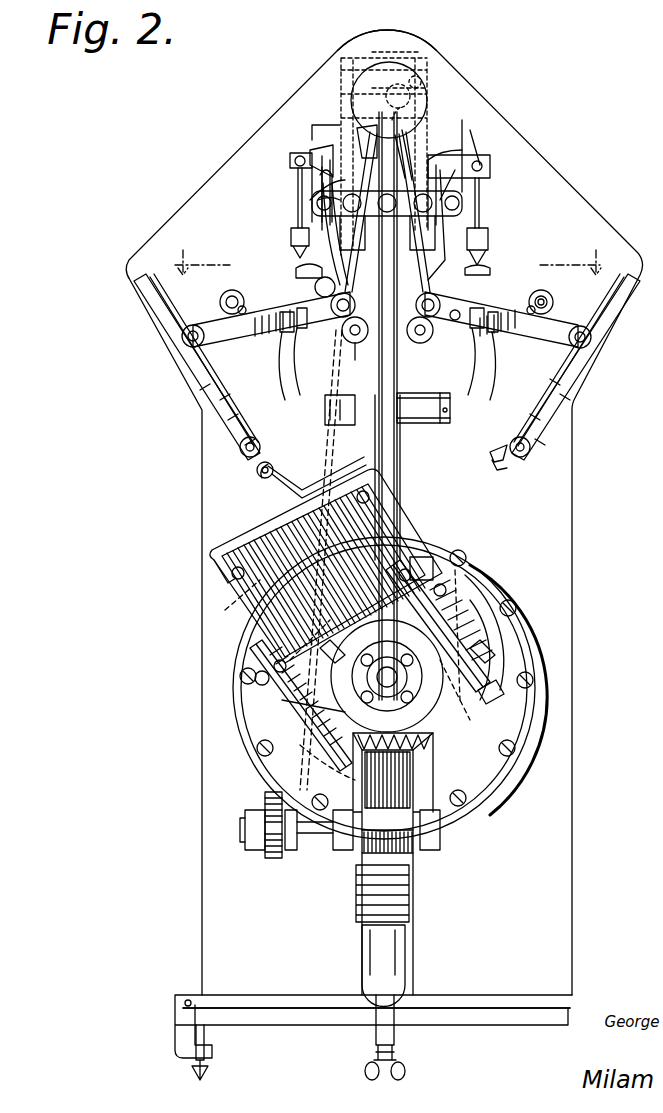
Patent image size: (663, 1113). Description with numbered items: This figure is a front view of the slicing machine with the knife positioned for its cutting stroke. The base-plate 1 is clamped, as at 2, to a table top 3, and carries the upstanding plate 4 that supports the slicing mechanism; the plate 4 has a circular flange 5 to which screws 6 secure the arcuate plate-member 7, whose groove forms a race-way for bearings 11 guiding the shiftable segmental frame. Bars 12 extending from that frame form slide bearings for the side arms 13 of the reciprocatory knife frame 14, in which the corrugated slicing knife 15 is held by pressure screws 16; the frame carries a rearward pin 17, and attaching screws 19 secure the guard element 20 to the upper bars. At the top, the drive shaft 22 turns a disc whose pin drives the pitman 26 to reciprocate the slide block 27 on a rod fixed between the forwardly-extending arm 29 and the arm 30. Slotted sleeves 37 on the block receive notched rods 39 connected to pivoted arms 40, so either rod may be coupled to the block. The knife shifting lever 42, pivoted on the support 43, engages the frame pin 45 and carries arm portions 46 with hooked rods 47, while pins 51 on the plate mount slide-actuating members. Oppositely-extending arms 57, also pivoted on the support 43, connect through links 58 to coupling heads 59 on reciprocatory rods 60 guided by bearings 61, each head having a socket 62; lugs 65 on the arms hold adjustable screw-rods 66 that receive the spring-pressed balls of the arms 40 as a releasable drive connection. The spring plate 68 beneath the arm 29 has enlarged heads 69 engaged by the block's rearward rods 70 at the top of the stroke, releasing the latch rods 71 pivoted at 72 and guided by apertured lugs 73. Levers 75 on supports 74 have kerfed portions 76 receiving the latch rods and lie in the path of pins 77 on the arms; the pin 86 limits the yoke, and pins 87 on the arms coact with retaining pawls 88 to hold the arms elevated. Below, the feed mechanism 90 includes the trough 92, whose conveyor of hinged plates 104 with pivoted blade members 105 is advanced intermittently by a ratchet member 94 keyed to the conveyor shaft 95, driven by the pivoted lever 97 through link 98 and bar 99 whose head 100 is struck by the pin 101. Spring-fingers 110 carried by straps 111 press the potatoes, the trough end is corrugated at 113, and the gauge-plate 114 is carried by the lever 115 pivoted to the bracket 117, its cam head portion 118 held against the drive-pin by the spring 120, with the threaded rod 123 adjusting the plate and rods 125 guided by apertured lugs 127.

The base-plate 1 is at (488, 997).
The clamp 2 is at (394, 1040).
The table top 3 is at (474, 1018).
The upstanding plate 4 is at (384, 512).
The circular flange 5 is at (520, 612).
The screws 6 is at (505, 600).
The arcuate plate-member 7 is at (538, 640).
The bearings 11 is at (470, 565).
The bars 12 is at (464, 691).
The side arms 13 is at (533, 672).
The knife frame 14 is at (236, 535).
The slicing knife 15 is at (230, 563).
The pressure screws 16 is at (400, 492).
The pin 17 is at (272, 478).
The attaching screws 19 is at (274, 666).
The guard element 20 is at (346, 655).
The drive shaft 22 is at (389, 100).
The drive pitman 26 is at (420, 137).
The slide block 27 is at (466, 228).
The forwardly-extending arm 29 is at (346, 152).
The arm 30 is at (290, 247).
The sleeves 37 is at (490, 240).
The rods 39 is at (318, 148).
The pivoted arms 40 is at (322, 322).
The knife shifting lever 42 is at (352, 350).
The support 43 is at (345, 449).
The pin 45 is at (275, 620).
The arm portions 46 is at (316, 288).
The rods 47 is at (318, 188).
The pins 51 is at (365, 351).
The arms 57 is at (253, 338).
The link 58 is at (205, 360).
The coupling head 59 is at (242, 455).
The reciprocatory rod 60 is at (168, 312).
The bearings 61 is at (235, 378).
The socket 62 is at (384, 462).
The lugs 65 is at (387, 367).
The screw-rods 66 is at (394, 375).
The spring plate 68 is at (482, 160).
The terminal enlarged portions 69 is at (292, 160).
The rearwardly-extending rods 70 is at (312, 200).
The latch rods 71 is at (305, 188).
The pivot 72 is at (290, 170).
The apertured lugs 73 is at (290, 232).
The supports 74 is at (510, 300).
The levers 75 is at (305, 280).
The kerfed portion 76 is at (490, 270).
The pins 77 is at (385, 294).
The pin 86 is at (470, 150).
The pins 87 is at (428, 63).
The retaining pawls 88 is at (552, 312).
The feed mechanism 90 is at (418, 780).
The trough 92 is at (478, 692).
The ratchet member 94 is at (265, 800).
The conveyor shaft 95 is at (325, 838).
The pivoted lever 97 is at (290, 856).
The link 98 is at (292, 762).
The bar 99 is at (336, 108).
The head 100 is at (455, 64).
The pin 101 is at (462, 87).
The plates 104 is at (416, 896).
The blade members 105 is at (420, 760).
The spring-fingers 110 is at (515, 575).
The straps 111 is at (470, 600).
The corrugations 113 is at (420, 738).
The gauge-plate 114 is at (340, 712).
The lever 115 is at (400, 462).
The bracket 117 is at (452, 408).
The head portion 118 is at (420, 122).
The spring 120 is at (396, 385).
The threaded rod 123 is at (387, 679).
The rods 125 is at (405, 660).
The apertured lugs 127 is at (387, 678).